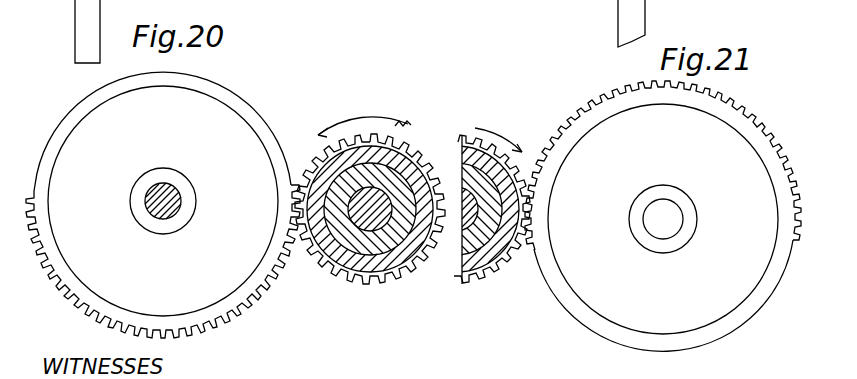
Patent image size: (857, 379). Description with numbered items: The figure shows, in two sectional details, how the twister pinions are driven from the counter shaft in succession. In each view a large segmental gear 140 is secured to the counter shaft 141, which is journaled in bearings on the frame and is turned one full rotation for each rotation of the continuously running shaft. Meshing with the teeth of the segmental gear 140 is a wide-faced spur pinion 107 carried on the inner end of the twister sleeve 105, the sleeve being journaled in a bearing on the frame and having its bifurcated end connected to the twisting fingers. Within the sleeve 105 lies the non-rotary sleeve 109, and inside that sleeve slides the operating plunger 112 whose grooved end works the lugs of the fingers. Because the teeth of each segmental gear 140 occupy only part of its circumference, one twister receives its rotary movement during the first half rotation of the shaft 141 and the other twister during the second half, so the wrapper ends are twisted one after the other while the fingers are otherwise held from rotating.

In FIG. 20, the segmental gear 140 is at (306, 327).
In FIG. 21, the segmental gear 140 is at (663, 210).
In FIG. 20, the counter shaft 141 is at (161, 209).
In FIG. 21, the counter shaft 141 is at (684, 190).
In FIG. 20, the sleeve 105 is at (371, 278).
In FIG. 21, the sleeve 105 is at (503, 267).
In FIG. 20, the wide-faced spur pinion 107 is at (241, 259).
In FIG. 21, the wide-faced spur pinion 107 is at (513, 258).
In FIG. 20, the non-rotary sleeve 109 is at (405, 270).
In FIG. 21, the non-rotary sleeve 109 is at (463, 280).
In FIG. 20, the operating plunger 112 is at (366, 185).
In FIG. 21, the operating plunger 112 is at (479, 243).